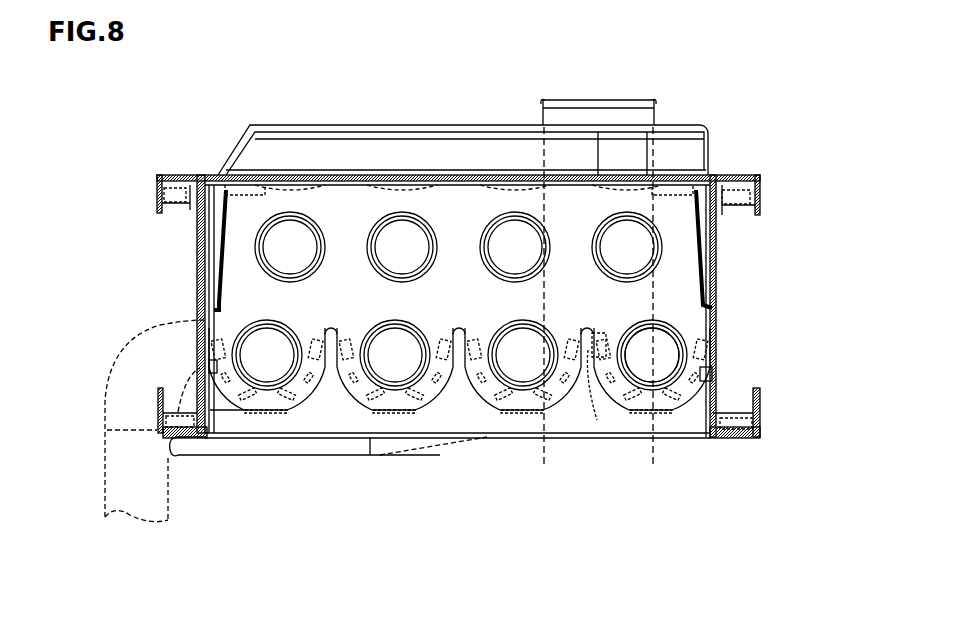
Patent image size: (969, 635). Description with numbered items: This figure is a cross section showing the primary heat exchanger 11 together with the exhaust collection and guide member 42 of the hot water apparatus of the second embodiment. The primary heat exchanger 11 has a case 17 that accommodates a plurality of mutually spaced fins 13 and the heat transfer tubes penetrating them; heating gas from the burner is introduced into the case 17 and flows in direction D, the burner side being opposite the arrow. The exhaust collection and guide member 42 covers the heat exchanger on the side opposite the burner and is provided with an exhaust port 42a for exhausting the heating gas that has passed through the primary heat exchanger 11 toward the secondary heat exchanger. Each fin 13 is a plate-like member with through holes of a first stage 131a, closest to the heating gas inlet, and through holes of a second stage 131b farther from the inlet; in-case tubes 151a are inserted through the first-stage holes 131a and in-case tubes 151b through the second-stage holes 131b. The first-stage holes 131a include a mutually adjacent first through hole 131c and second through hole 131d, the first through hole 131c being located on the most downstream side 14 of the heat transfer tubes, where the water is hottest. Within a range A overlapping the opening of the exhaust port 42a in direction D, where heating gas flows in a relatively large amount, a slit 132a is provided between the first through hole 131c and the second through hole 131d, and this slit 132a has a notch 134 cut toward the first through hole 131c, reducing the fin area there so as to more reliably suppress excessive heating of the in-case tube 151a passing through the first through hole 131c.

The primary heat exchanger 11 is at (172, 137).
The fin 13 is at (682, 318).
The most downstream side 14 is at (664, 352).
The case 17 is at (700, 227).
The exhaust collection and guide member 42 is at (708, 140).
The exhaust port 42a is at (655, 92).
The through hole of the first stage 131a is at (265, 392).
The through hole of the second stage 131b is at (268, 178).
The first through hole 131c is at (660, 395).
The second through hole 131d is at (523, 392).
The slit 132a is at (581, 355).
The notch 134 is at (593, 345).
The in-case tube 151a is at (234, 366).
The in-case tube 151b is at (256, 246).
The range A is at (653, 428).
The direction D is at (791, 140).